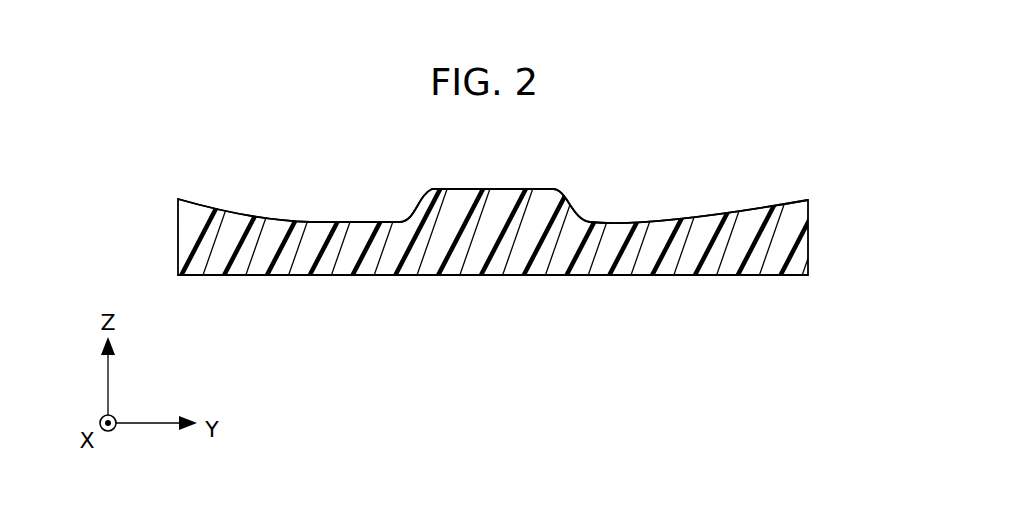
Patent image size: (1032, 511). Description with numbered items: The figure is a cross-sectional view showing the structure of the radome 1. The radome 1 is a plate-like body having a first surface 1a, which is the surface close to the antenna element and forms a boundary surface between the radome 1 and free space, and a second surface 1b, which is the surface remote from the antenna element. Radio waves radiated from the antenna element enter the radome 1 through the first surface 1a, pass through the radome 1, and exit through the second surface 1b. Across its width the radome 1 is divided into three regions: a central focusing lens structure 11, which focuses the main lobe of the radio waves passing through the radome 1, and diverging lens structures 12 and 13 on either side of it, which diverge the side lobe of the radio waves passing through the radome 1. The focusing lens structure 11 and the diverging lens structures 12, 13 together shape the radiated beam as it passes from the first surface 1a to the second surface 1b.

The radome 1 is at (808, 230).
The first surface 1a is at (767, 290).
The second surface 1b is at (767, 194).
The focusing lens structure 11 is at (412, 285).
The diverging lens structure 12 is at (178, 285).
The diverging lens structure 13 is at (592, 285).